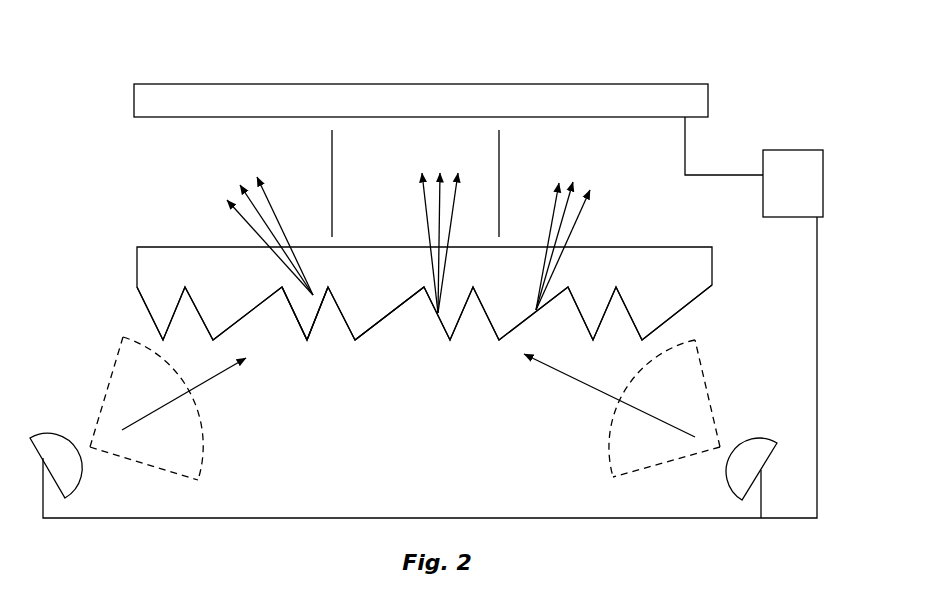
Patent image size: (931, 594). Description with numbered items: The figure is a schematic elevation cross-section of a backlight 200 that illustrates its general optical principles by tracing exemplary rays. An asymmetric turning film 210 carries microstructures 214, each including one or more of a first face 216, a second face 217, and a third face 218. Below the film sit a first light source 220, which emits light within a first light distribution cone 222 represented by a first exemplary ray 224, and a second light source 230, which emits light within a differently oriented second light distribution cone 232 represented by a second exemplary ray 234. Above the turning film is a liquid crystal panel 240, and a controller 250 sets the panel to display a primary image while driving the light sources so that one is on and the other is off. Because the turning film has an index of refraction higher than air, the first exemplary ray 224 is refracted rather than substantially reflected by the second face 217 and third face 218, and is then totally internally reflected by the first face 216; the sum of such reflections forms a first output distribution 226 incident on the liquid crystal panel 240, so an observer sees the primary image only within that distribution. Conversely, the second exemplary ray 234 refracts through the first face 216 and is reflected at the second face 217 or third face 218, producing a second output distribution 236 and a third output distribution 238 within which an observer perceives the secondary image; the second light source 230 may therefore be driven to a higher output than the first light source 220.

The backlight 200 is at (204, 62).
The liquid crystal panel 240 is at (709, 93).
The controller 250 is at (793, 183).
The asymmetric turning film 210 is at (155, 252).
The microstructures 214 is at (424, 307).
The first face 216 is at (295, 318).
The second face 217 is at (317, 325).
The third face 218 is at (377, 327).
The first output distribution 226 is at (408, 168).
The second output distribution 236 is at (216, 182).
The third output distribution 238 is at (596, 178).
The second light source 230 is at (50, 435).
The second light distribution cone 232 is at (117, 357).
The second exemplary ray 234 is at (210, 380).
The first light source 220 is at (757, 438).
The first light distribution cone 222 is at (702, 360).
The first exemplary ray 224 is at (557, 371).